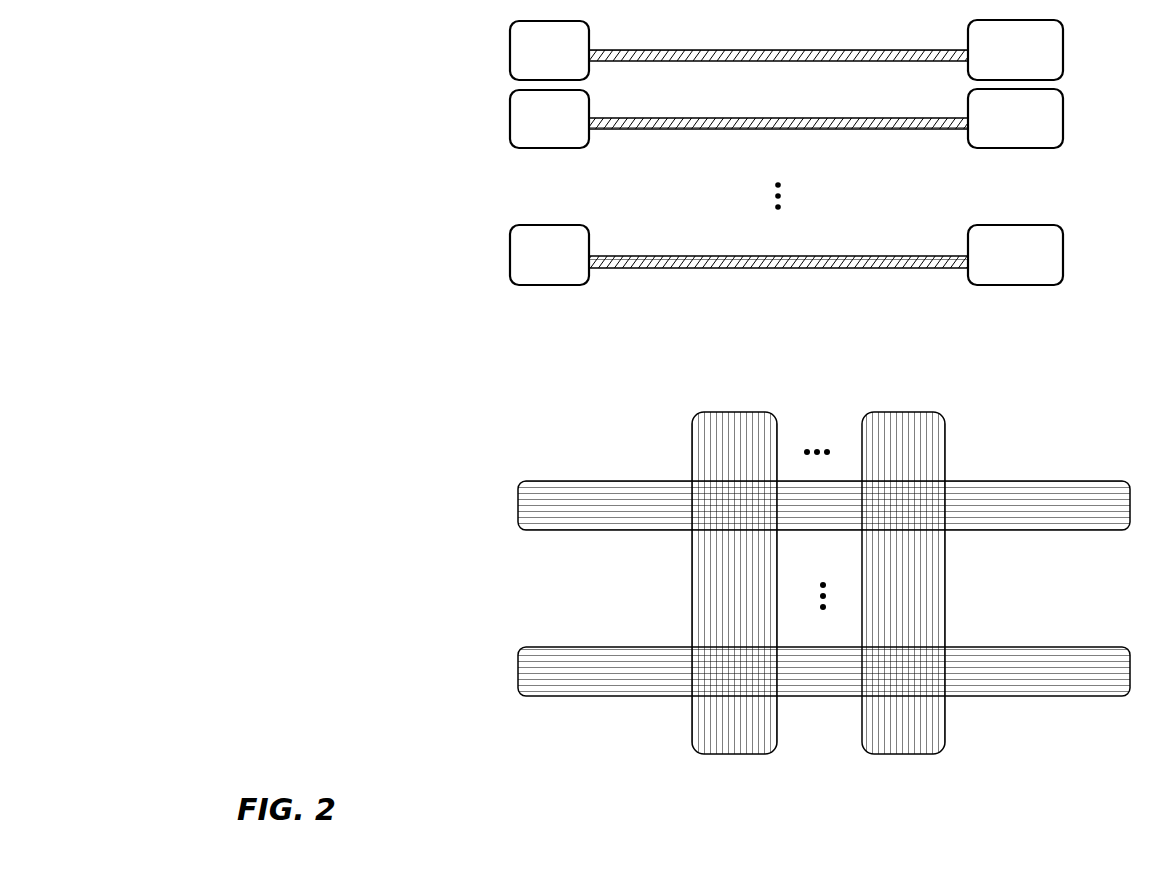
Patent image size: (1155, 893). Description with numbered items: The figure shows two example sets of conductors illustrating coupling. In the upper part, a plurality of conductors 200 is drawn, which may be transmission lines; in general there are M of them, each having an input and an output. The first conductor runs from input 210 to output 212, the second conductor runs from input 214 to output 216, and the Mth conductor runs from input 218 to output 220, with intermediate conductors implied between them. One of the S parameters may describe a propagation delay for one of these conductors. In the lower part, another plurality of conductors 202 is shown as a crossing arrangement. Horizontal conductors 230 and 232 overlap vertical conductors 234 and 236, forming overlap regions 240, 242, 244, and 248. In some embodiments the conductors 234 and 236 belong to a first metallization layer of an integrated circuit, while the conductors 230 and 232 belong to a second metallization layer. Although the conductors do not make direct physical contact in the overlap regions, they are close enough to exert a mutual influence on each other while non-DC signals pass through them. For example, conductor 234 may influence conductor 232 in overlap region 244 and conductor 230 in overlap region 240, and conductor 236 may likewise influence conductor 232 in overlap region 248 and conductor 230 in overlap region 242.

The plurality of conductors 200 is at (392, 141).
The another plurality of conductors 202 is at (392, 685).
The input 210 is at (549, 50).
The output 212 is at (1015, 50).
The input 214 is at (549, 119).
The output 216 is at (1015, 118).
The input 218 is at (549, 255).
The output 220 is at (1015, 255).
The conductor 230 is at (518, 507).
The conductor 232 is at (518, 672).
The conductor 234 is at (735, 412).
The conductor 236 is at (905, 412).
The overlap region 240 is at (713, 506).
The overlap region 242 is at (925, 508).
The overlap region 244 is at (713, 671).
The overlap region 248 is at (934, 679).